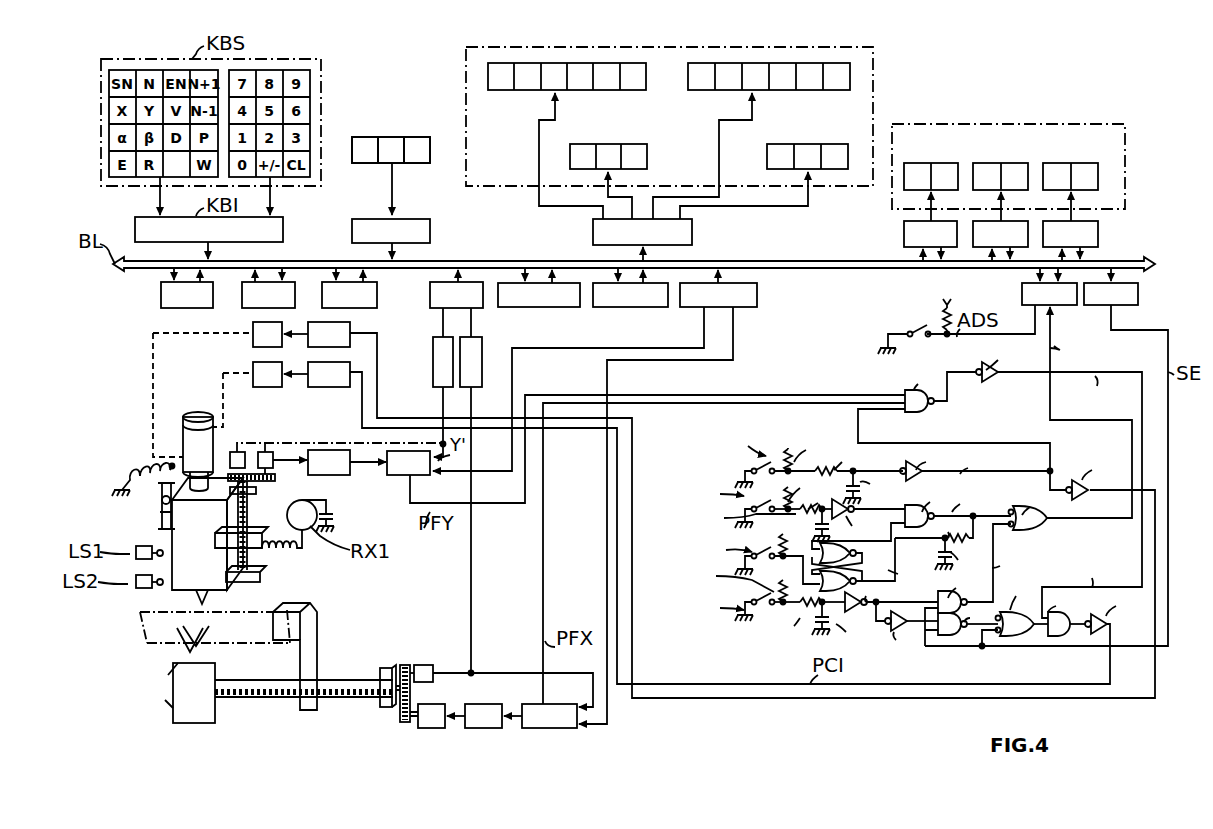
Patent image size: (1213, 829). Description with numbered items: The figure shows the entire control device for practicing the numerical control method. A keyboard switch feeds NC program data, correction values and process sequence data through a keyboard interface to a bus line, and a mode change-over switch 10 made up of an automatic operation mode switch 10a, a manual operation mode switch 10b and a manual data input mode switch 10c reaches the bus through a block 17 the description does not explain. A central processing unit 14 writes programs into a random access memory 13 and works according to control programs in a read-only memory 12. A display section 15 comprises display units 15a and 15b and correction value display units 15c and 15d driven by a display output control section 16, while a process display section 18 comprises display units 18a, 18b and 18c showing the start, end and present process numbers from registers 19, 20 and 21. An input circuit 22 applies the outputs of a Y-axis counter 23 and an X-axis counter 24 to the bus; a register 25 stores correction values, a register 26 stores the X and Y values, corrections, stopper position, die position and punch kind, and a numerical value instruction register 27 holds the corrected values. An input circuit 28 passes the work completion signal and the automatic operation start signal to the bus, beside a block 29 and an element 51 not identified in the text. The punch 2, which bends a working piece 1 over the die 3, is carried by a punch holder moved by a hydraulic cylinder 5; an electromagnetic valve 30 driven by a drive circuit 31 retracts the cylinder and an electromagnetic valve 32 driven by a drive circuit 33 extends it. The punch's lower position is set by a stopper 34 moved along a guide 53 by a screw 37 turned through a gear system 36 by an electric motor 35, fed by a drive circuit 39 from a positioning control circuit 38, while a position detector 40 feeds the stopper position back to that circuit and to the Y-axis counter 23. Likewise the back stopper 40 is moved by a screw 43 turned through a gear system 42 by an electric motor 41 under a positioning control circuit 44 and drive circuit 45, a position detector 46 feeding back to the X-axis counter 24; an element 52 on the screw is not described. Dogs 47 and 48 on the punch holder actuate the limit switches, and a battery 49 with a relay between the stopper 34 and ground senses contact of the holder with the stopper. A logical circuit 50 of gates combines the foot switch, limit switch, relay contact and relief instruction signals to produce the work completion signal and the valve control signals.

The workpiece 1 is at (140, 632).
The punch 2 is at (204, 592).
The die 3 is at (176, 662).
The hydraulic cylinder 5 is at (180, 441).
The mode change-over switch 10 is at (391, 137).
The automatic operation mode switch 10a is at (364, 137).
The manual operation mode switch 10b is at (409, 137).
The manual data input mode switch 10c is at (413, 163).
The read-only memory 12 is at (161, 294).
The random access memory 13 is at (242, 308).
The central processing unit 14 is at (377, 295).
The display section 15 is at (604, 47).
The display unit 15a is at (552, 63).
The display unit 15b is at (785, 63).
The correction value display unit 15c is at (647, 150).
The correction value display unit 15d is at (804, 144).
The display output control section 16 is at (692, 232).
The switch interface 17 is at (430, 231).
The process display section 18 is at (1000, 124).
The display unit 18a is at (930, 157).
The display unit 18b is at (1000, 157).
The display unit 18c is at (1070, 157).
The register 19 is at (904, 234).
The register 20 is at (984, 248).
The register 21 is at (1098, 234).
The input circuit 22 is at (432, 308).
The Y-axis counter 23 is at (433, 371).
The X-axis counter 24 is at (482, 356).
The register 25 is at (564, 307).
The register 26 is at (644, 307).
The numerical value instruction register 27 is at (757, 296).
The input circuit 28 is at (1022, 288).
The input interface 29 is at (1138, 300).
The electromagnetic valve 30 is at (253, 338).
The drive circuit 31 is at (350, 326).
The electromagnetic valve 32 is at (259, 387).
The drive circuit 33 is at (332, 387).
The stopper 34 is at (258, 552).
The electric motor 35 is at (270, 452).
The gear system 36 is at (272, 480).
The screw 37 is at (246, 512).
The positioning control circuit 38 is at (390, 475).
The drive circuit 39 is at (342, 475).
The back stopper 40 is at (239, 452).
The electric motor 41 is at (440, 728).
The gear system 42 is at (412, 688).
The screw 43 is at (364, 698).
The positioning control circuit 44 is at (560, 704).
The drive circuit 45 is at (492, 704).
The position detector 46 is at (424, 665).
The dog 47 is at (150, 492).
The dog 48 is at (158, 528).
The battery 49 is at (332, 512).
The logical circuit 50 is at (846, 440).
The switch 51 is at (914, 328).
The coupling 52 is at (348, 677).
The guide 53 is at (258, 540).